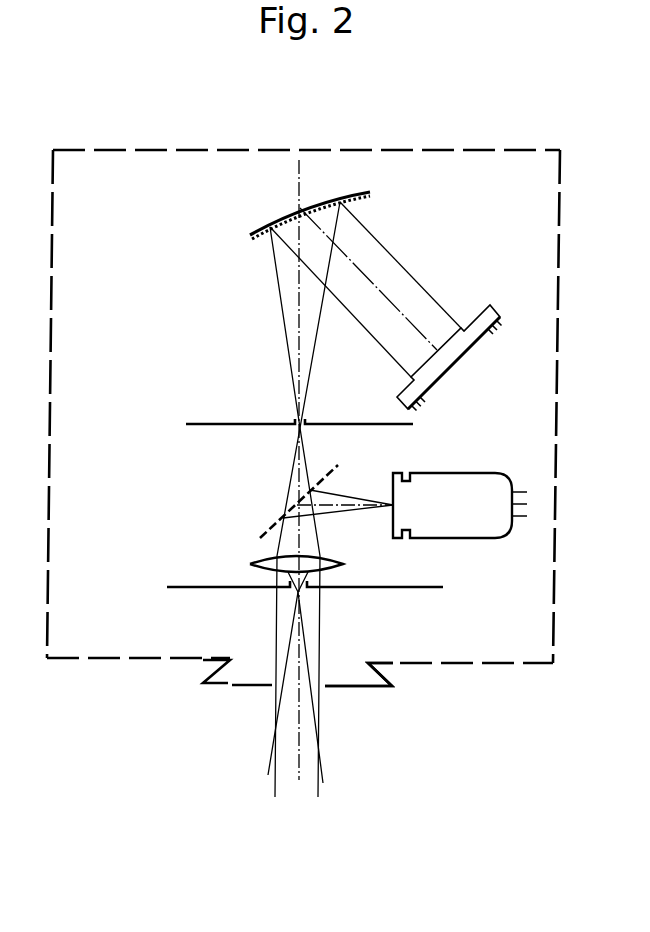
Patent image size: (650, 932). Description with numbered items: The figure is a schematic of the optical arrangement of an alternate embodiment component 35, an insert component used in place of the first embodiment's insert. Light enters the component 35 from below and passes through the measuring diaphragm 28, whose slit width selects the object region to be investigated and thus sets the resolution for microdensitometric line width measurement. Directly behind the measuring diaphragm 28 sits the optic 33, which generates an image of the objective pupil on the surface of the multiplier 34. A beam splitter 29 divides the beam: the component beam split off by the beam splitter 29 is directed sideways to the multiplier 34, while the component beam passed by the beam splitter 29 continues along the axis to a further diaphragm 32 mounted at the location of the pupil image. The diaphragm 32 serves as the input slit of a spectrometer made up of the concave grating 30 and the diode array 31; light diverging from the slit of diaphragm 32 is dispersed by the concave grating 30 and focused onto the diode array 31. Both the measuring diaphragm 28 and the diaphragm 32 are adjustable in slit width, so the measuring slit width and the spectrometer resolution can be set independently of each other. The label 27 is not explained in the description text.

The entrance opening / light beam inlet 27 is at (391, 684).
The measuring diaphragm 28 is at (365, 589).
The beam splitter 29 is at (265, 536).
The concave grating 30 is at (319, 199).
The diode array 31 is at (443, 364).
The diaphragm 32 is at (200, 424).
The optic 33 is at (343, 565).
The multiplier 34 is at (452, 538).
The alternate embodiment component 35 is at (551, 663).